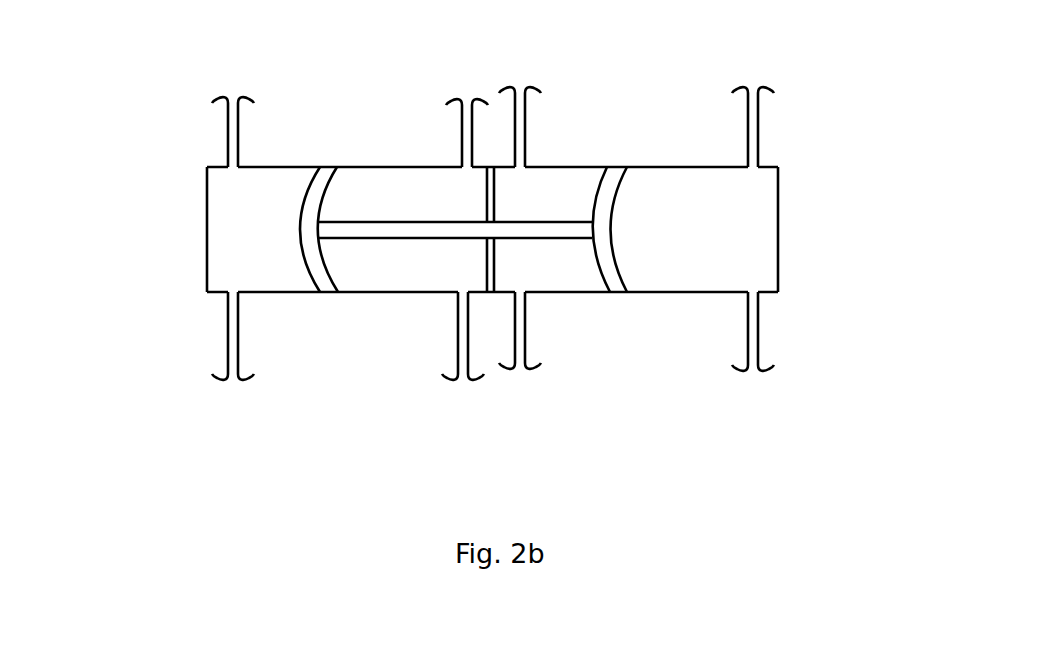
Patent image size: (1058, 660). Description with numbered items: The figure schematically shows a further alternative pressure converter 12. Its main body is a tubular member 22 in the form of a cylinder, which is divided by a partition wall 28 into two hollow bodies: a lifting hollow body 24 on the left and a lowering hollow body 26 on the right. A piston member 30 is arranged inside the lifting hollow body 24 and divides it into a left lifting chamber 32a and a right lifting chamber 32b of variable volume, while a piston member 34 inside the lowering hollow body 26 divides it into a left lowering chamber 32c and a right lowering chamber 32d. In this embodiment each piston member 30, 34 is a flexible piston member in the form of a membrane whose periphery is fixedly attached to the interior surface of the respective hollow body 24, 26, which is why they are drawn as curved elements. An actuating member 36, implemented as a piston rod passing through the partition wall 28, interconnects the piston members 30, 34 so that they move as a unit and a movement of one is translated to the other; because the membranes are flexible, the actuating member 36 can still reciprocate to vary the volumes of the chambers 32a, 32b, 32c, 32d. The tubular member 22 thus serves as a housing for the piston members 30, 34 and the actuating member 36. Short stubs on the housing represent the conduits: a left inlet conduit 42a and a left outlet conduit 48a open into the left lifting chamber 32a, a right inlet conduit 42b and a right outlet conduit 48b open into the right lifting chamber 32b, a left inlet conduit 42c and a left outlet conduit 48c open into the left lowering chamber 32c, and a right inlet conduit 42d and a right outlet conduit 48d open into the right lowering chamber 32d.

The pressure converter 12 is at (128, 82).
The tubular member 22 is at (780, 235).
The lifting hollow body 24 is at (350, 165).
The lowering hollow body 26 is at (695, 165).
The partition wall 28 is at (488, 199).
The piston member 30 is at (315, 194).
The piston member 34 is at (605, 197).
The actuating member 36 is at (389, 233).
The left lifting chamber 32a is at (259, 273).
The right lifting chamber 32b is at (415, 273).
The left lowering chamber 32c is at (550, 273).
The right lowering chamber 32d is at (703, 273).
The left inlet conduit 42a is at (233, 318).
The right inlet conduit 42b is at (464, 318).
The left inlet conduit 42c is at (522, 127).
The right inlet conduit 42d is at (756, 127).
The left outlet conduit 48a is at (235, 129).
The right outlet conduit 48b is at (466, 122).
The left outlet conduit 48c is at (522, 320).
The right outlet conduit 48d is at (756, 318).